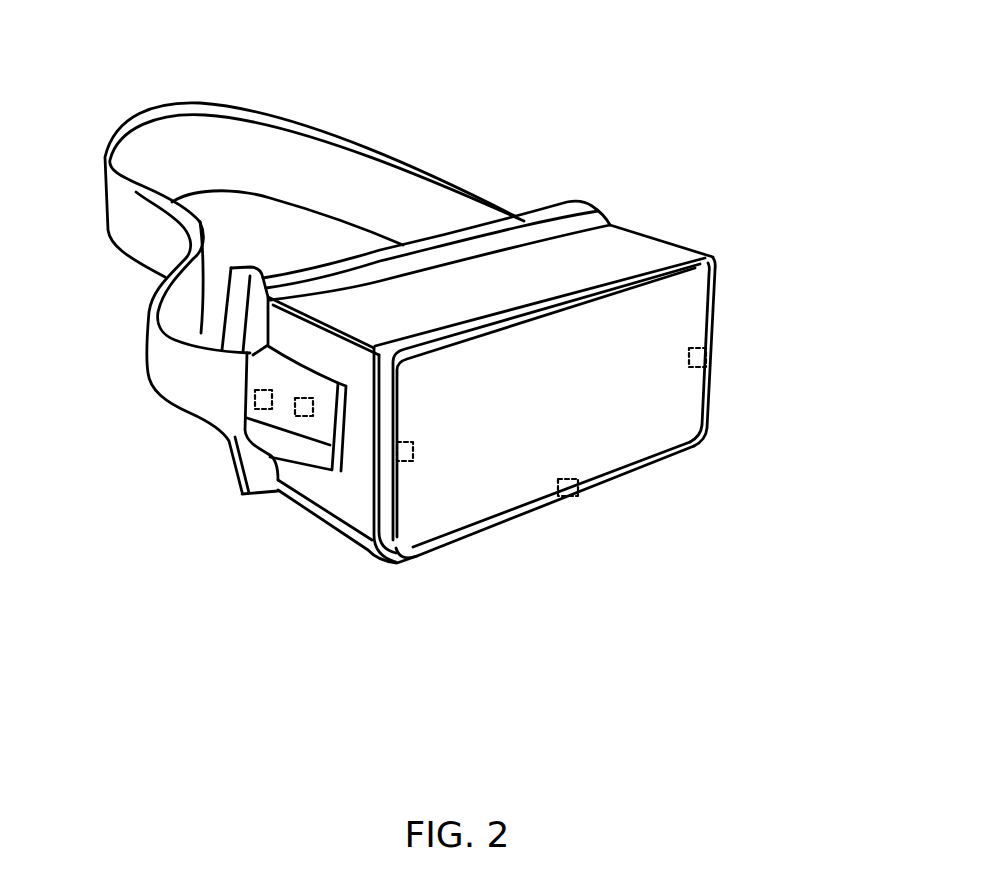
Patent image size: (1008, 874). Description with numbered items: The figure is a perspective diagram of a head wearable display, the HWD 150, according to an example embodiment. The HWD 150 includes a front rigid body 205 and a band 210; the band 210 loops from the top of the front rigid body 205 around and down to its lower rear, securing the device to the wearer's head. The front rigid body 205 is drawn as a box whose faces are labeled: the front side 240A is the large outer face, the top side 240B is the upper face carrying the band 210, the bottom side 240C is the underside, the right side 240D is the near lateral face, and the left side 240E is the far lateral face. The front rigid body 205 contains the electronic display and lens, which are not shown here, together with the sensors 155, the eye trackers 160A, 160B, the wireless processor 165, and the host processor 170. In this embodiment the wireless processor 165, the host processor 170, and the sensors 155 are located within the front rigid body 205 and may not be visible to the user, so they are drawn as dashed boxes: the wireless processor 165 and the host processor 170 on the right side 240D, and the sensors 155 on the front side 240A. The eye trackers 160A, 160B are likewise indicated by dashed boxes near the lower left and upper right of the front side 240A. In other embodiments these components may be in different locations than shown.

The HWD 150 is at (69, 48).
The band 210 is at (418, 168).
The front rigid body 205 is at (713, 257).
The front side 240A is at (628, 430).
The top side 240B is at (340, 301).
The bottom side 240C is at (308, 532).
The right side 240D is at (352, 492).
The left side 240E is at (690, 240).
The wireless processor 165 is at (254, 398).
The host processor 170 is at (291, 426).
The eye tracker 160A is at (407, 466).
The eye tracker 160B is at (712, 358).
The sensors 155 is at (572, 497).